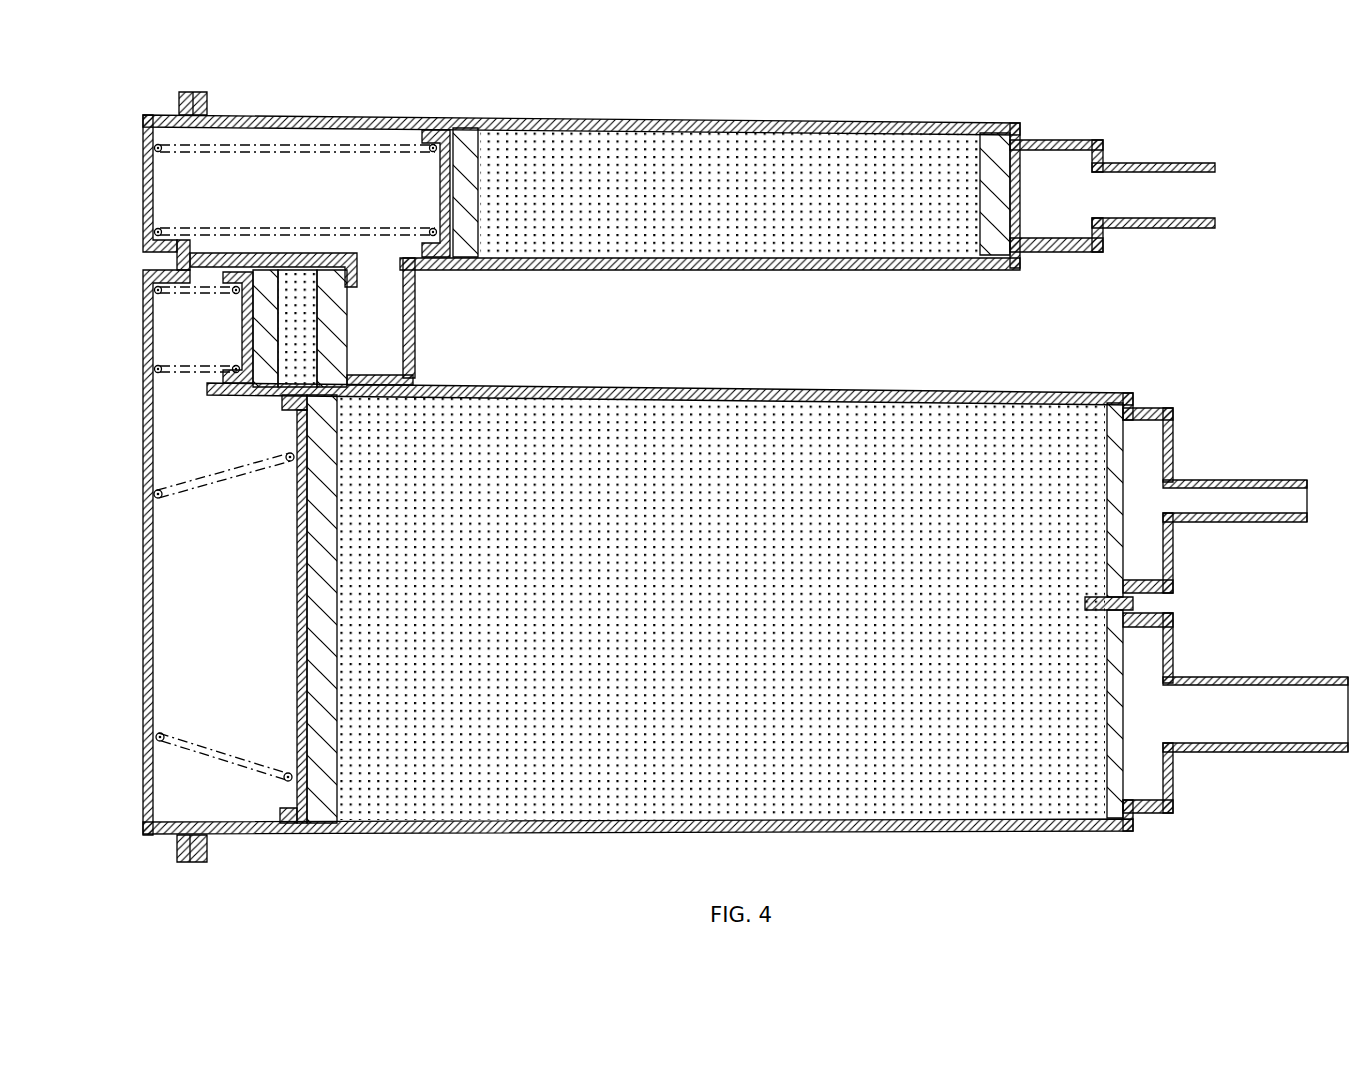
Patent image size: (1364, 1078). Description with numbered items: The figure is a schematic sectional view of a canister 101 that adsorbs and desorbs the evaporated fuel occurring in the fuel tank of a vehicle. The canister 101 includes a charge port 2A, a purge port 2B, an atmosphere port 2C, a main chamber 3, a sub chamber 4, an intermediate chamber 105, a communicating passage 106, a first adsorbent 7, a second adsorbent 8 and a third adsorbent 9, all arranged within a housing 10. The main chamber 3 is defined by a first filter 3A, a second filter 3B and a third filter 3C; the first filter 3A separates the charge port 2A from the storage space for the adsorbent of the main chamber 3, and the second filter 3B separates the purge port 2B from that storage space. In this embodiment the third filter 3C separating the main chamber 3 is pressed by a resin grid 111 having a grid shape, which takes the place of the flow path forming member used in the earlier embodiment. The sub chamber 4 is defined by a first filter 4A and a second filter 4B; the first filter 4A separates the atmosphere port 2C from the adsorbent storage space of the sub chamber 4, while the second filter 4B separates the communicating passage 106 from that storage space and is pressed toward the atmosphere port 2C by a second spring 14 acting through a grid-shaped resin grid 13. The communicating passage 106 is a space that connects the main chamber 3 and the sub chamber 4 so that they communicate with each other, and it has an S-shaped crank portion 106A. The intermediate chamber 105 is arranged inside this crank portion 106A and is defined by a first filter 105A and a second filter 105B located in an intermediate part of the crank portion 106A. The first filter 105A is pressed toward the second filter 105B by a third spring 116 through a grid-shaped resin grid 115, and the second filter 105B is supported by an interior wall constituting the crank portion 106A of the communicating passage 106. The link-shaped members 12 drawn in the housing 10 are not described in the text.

The canister 101 is at (1152, 71).
The housing 10 is at (142, 131).
The communicating passage 106 is at (186, 195).
The crank portion 106A is at (424, 321).
The intermediate chamber 105 is at (230, 230).
The first filter 105A is at (263, 348).
The second filter 105B is at (333, 273).
The second spring 14 is at (290, 152).
The resin grid 13 is at (442, 188).
The resin grid 115 is at (247, 322).
The third spring 116 is at (173, 295).
The third adsorbent 9 is at (282, 403).
The resin grid 111 is at (303, 597).
The link 12 is at (200, 760).
The sub chamber 4 is at (716, 110).
The first filter 4A is at (1000, 186).
The second filter 4B is at (466, 194).
The second adsorbent 8 is at (818, 150).
The atmosphere port 2C is at (1165, 185).
The main chamber 3 is at (993, 839).
The first filter 3A is at (1113, 715).
The second filter 3B is at (1113, 442).
The third filter 3C is at (330, 690).
The first adsorbent 7 is at (820, 775).
The charge port 2A is at (1280, 715).
The purge port 2B is at (1240, 490).